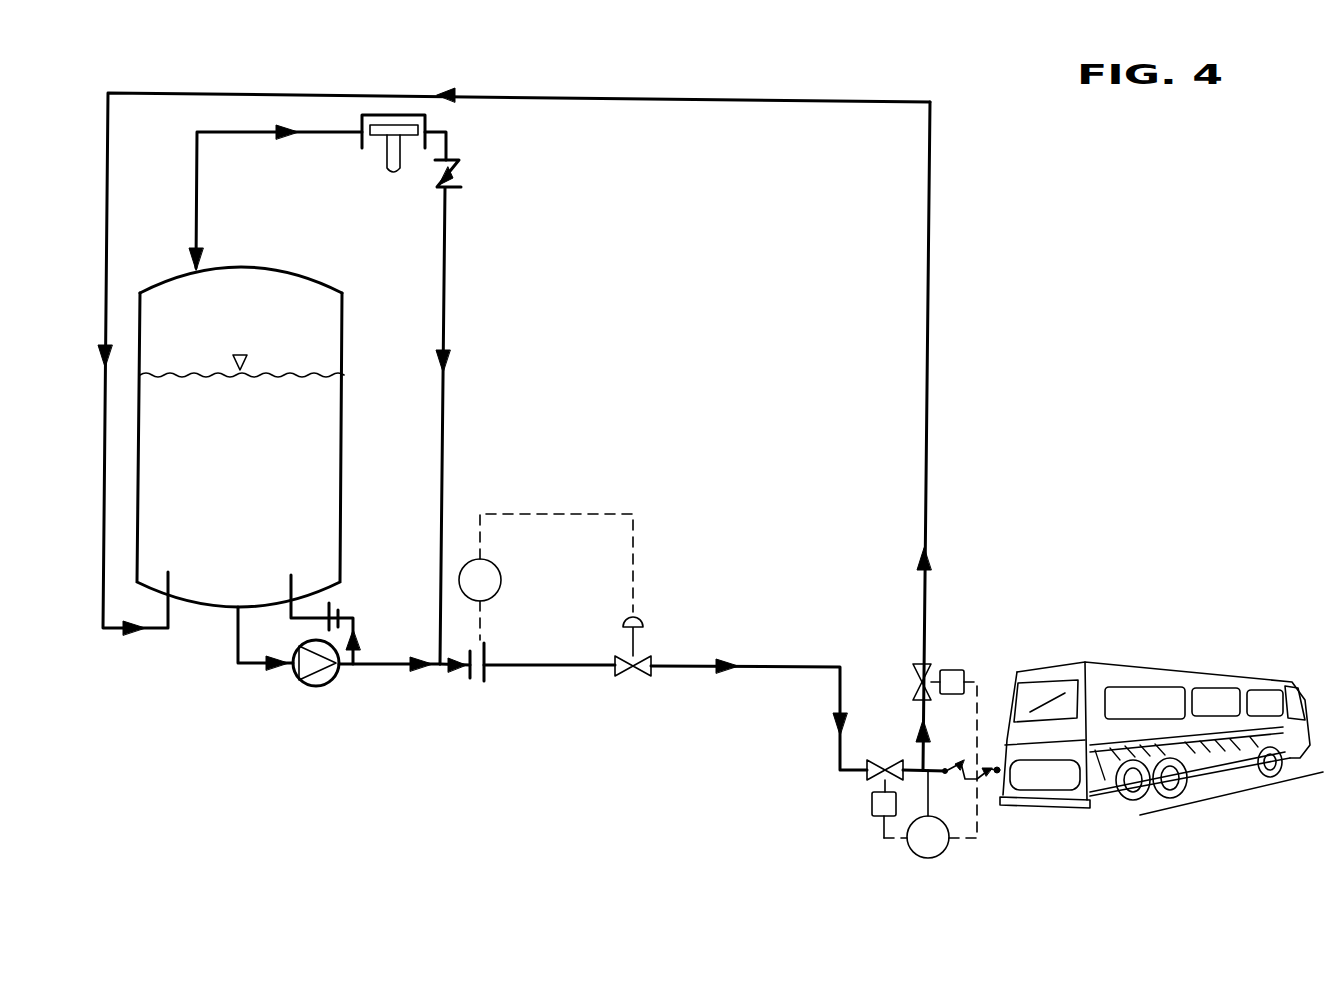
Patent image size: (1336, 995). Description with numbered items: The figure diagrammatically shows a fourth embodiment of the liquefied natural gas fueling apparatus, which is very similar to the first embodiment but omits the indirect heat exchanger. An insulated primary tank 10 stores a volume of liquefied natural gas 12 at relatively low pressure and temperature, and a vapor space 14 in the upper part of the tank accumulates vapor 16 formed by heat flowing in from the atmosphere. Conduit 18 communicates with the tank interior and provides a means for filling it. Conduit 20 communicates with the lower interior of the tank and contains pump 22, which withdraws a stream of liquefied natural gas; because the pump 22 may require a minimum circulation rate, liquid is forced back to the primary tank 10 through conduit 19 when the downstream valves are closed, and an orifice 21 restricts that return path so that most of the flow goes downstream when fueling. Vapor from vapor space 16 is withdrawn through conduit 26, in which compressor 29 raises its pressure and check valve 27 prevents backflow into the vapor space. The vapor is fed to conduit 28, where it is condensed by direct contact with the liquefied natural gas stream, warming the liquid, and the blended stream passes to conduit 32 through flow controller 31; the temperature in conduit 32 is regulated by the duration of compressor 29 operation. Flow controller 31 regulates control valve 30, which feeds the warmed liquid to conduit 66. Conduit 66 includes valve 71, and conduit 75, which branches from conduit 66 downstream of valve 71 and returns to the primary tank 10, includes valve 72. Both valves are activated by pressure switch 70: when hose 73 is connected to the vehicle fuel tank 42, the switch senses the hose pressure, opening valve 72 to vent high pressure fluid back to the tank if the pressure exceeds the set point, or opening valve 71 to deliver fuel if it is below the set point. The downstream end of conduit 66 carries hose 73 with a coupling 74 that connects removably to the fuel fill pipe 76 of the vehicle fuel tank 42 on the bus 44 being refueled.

The primary tank 10 is at (344, 462).
The liquefied natural gas 12 is at (221, 498).
The vapor space 14 is at (168, 293).
The vapor 16 is at (229, 318).
The conduit 18 is at (196, 213).
The conduit 19 is at (341, 612).
The conduit 20 is at (383, 663).
The orifice 21 is at (333, 603).
The pump 22 is at (308, 690).
The conduit 26 is at (352, 130).
The check valve 27 is at (462, 172).
The conduit 28 is at (441, 672).
The compressor 29 is at (402, 115).
The control valve 30 is at (642, 656).
The flow controller 31 is at (501, 580).
The conduit 32 is at (510, 668).
The vehicle fuel tank 42 is at (1172, 800).
The bus 44 is at (1168, 664).
The conduit 66 is at (785, 668).
The pressure switch 70 is at (908, 843).
The valve 71 is at (868, 775).
The valve 72 is at (928, 672).
The hose 73 is at (962, 780).
The coupling 74 is at (997, 765).
The conduit 75 is at (928, 598).
The fuel fill pipe 76 is at (1124, 738).